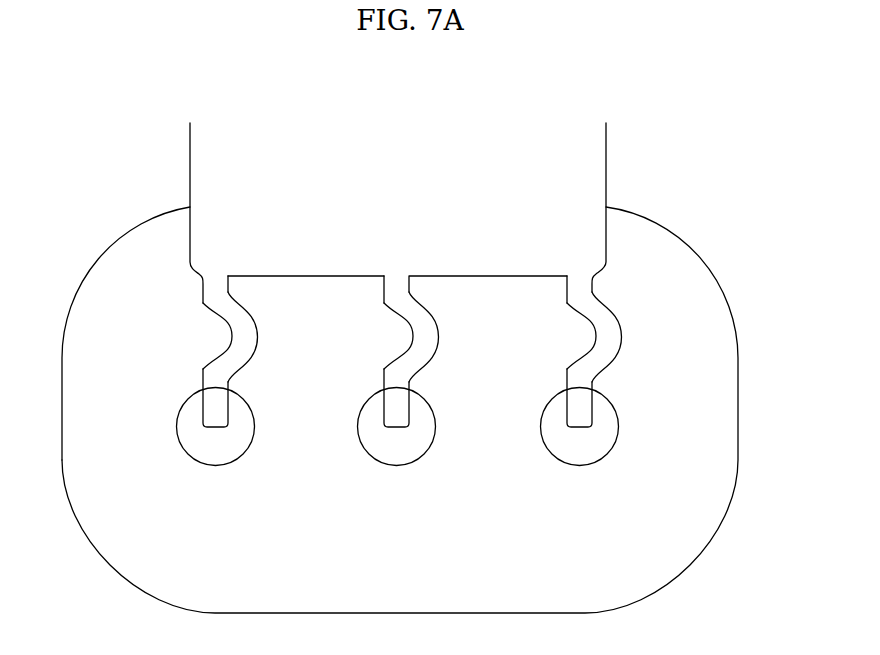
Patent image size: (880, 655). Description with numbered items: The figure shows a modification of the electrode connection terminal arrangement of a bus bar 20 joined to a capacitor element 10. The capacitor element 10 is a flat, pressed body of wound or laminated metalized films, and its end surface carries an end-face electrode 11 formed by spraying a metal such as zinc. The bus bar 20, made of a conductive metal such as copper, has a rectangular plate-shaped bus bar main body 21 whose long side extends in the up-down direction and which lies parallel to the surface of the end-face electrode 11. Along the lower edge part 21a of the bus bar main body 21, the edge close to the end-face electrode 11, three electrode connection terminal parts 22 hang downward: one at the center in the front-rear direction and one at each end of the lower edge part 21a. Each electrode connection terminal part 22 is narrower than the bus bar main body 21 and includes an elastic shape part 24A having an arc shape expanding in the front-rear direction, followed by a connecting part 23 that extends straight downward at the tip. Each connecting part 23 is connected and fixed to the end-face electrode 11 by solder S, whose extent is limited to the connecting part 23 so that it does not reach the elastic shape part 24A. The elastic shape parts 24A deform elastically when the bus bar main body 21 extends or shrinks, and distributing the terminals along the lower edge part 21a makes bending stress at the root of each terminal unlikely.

The capacitor element 10 is at (659, 226).
The end-face electrode 11 is at (148, 278).
The bus bar 20 is at (188, 168).
The bus bar main body 21 is at (607, 152).
The lower edge part 21a is at (338, 277).
The electrode connection terminal part 22 is at (254, 366).
The connecting part 23 is at (226, 412).
The elastic shape part 24A is at (258, 338).
The solder S is at (202, 467).